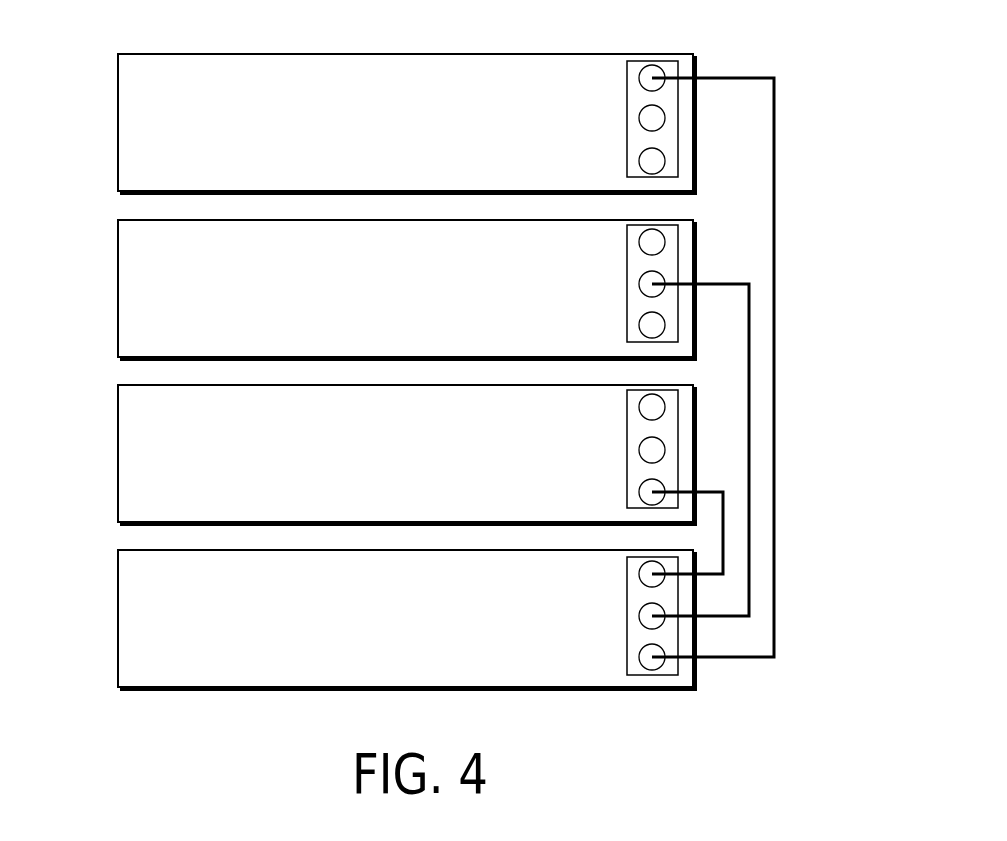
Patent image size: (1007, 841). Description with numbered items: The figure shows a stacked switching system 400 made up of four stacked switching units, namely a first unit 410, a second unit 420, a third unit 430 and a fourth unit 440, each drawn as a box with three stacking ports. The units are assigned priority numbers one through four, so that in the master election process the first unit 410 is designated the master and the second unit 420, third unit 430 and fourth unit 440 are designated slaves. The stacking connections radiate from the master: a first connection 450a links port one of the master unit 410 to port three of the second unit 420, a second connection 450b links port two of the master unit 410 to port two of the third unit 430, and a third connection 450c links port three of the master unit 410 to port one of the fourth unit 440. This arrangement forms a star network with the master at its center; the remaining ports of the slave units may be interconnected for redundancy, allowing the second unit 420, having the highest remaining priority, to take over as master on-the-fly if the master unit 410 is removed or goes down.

The stacked switching system 400 is at (677, 31).
The Unit 1 410 is at (388, 631).
The Unit 2 420 is at (388, 466).
The Unit 3 430 is at (388, 300).
The Unit 4 440 is at (388, 135).
The stacking connection 450a is at (723, 543).
The stacking connection 450b is at (750, 505).
The stacking connection 450c is at (775, 462).